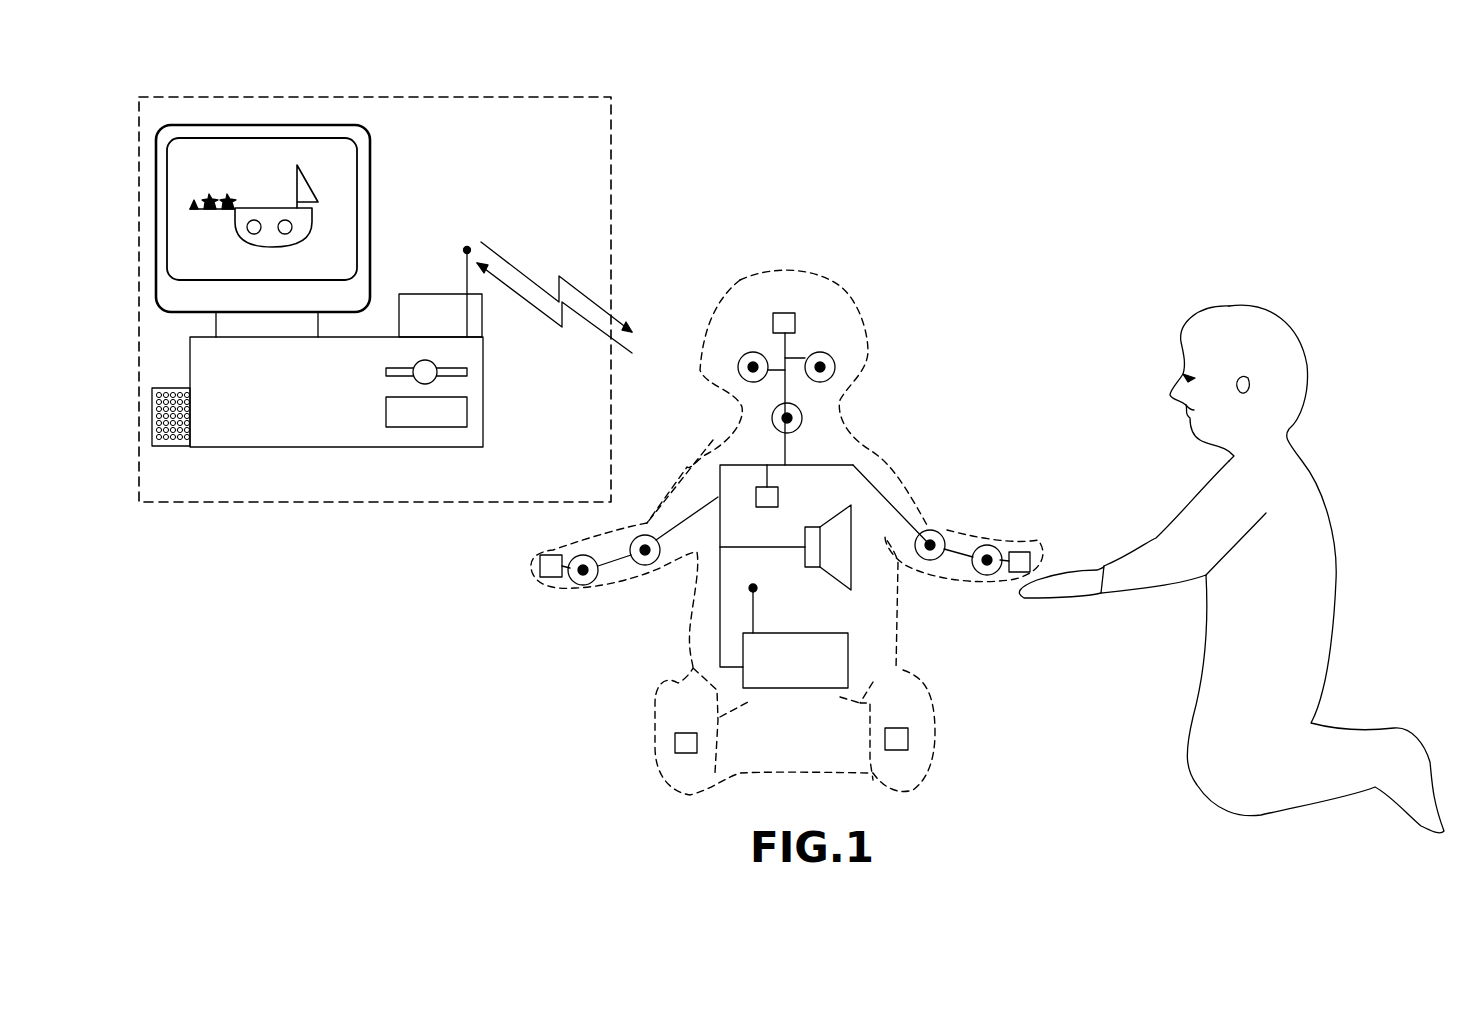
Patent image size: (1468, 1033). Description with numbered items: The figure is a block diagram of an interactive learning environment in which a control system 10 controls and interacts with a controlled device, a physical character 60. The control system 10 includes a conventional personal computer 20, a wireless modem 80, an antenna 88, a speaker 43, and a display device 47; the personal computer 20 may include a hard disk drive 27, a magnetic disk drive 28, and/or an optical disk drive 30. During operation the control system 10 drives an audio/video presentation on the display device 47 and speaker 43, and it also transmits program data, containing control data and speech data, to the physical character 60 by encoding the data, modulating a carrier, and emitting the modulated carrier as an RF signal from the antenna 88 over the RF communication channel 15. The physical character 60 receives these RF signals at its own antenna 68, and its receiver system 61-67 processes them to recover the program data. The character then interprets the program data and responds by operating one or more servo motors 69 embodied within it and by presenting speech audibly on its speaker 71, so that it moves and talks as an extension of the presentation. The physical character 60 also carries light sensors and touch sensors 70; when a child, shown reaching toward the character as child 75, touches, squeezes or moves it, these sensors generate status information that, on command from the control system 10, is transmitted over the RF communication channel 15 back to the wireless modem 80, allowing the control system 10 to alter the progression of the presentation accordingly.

The control system 10 is at (585, 137).
The display device 47 is at (370, 150).
The personal computer 20 is at (230, 375).
The speaker 43 is at (168, 448).
The wireless modem 80 is at (420, 294).
The antenna 88 is at (460, 268).
The RF communication channel 15 is at (568, 283).
The magnetic disk drive 28 is at (494, 372).
The optical disk drive 30 is at (467, 372).
The hard disk drive 27 is at (460, 425).
The physical character 60 is at (760, 280).
The light sensors and touch sensors 70 is at (795, 322).
The servo motors 69 is at (738, 367).
The antenna 68 is at (755, 625).
The receiver system 61-67 is at (825, 576).
The speaker 71 is at (851, 570).
The child 75 is at (1225, 303).